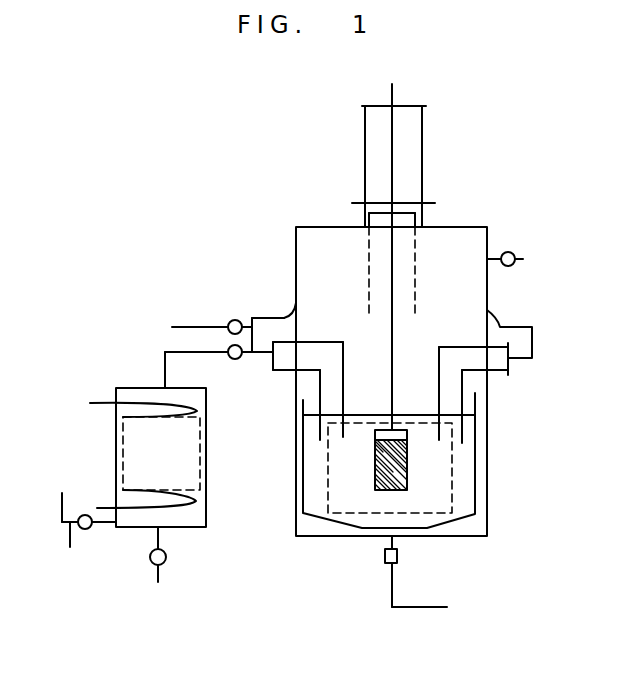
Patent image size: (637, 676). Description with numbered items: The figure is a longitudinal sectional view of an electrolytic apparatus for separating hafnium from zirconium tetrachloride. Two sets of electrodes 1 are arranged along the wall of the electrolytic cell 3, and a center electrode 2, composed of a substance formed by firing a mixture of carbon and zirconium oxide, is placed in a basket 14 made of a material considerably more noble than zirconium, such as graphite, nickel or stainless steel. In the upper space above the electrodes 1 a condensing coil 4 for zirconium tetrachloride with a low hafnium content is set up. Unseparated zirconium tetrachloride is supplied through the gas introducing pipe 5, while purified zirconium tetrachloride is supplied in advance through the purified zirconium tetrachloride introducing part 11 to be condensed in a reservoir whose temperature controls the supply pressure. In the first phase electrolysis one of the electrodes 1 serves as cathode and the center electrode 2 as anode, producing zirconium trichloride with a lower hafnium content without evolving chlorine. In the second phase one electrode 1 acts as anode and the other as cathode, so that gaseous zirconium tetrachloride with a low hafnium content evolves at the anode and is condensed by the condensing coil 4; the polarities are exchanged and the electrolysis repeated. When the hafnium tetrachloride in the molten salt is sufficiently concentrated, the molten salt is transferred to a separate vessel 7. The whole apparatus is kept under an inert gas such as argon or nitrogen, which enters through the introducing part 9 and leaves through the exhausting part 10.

The electrode 1 is at (328, 470).
The center electrode 2 is at (390, 333).
The electrolytic cell 3 is at (303, 500).
The condensing coil 4 is at (367, 255).
The gas introducing pipe 5 is at (285, 370).
The separate vessel 7 is at (427, 581).
The introducing part of inert gas 9 is at (176, 416).
The exhausting part 10 is at (305, 407).
The purified zirconium tetrachloride introducing part 11 is at (158, 571).
The basket 14 is at (373, 480).